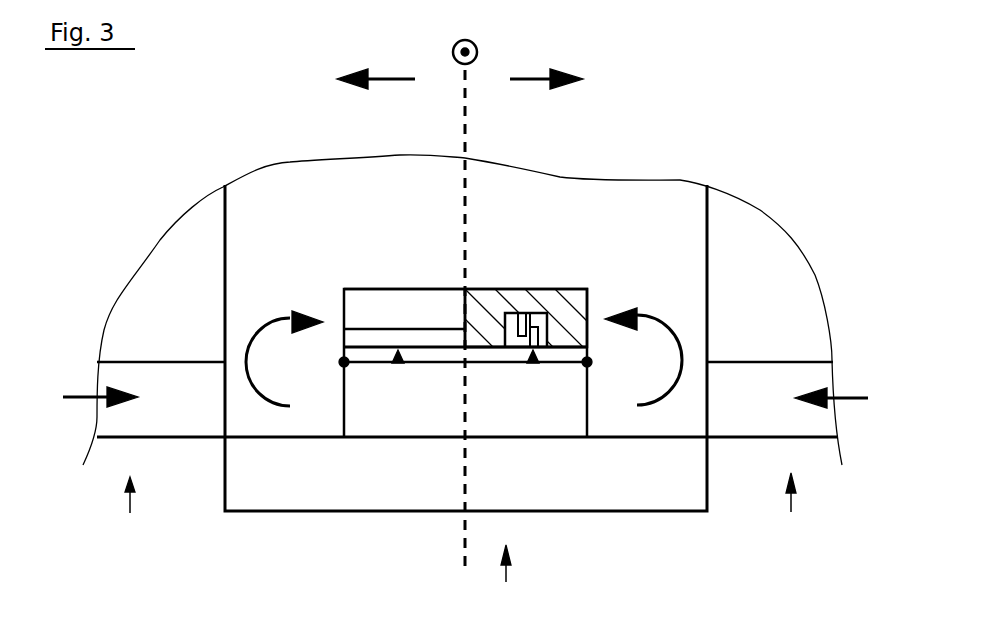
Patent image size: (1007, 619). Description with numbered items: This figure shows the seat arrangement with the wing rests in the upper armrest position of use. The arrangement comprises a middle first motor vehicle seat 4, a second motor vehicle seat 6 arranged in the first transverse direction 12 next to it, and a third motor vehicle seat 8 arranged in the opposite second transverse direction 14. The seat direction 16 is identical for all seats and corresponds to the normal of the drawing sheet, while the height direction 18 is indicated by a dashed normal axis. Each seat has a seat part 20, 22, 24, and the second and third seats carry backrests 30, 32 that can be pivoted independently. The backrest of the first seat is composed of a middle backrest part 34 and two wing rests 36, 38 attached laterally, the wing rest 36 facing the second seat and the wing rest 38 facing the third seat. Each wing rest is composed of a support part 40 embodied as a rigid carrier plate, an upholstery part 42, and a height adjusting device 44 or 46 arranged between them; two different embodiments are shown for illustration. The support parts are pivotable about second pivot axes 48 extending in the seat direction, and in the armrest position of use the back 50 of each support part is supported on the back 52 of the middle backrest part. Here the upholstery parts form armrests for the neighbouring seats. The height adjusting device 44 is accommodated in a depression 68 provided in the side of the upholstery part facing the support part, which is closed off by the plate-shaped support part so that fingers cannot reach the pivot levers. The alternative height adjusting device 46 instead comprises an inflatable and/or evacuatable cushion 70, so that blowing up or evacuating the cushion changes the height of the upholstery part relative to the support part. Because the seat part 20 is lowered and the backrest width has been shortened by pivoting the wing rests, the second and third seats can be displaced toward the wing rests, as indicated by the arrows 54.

The first motor vehicle seat 4 is at (505, 579).
The second motor vehicle seat 6 is at (790, 507).
The third motor vehicle seat 8 is at (129, 512).
The first transverse direction 12 is at (533, 75).
The second transverse direction 14 is at (388, 75).
The seat direction 16 is at (453, 50).
The height direction 18 is at (465, 540).
The seat part 20 is at (528, 487).
The seat part 22 is at (727, 413).
The seat part 24 is at (198, 413).
The backrest 30 is at (764, 259).
The backrest 32 is at (165, 257).
The middle backrest part 34 is at (475, 412).
The wing rest 36 is at (587, 276).
The wing rest 38 is at (345, 276).
The support part 40 is at (421, 356).
The upholstery part 42 is at (385, 300).
The height adjusting device 44 is at (534, 352).
The height adjusting device 46 is at (398, 352).
The second pivot axis 48 is at (344, 362).
The back 50 is at (354, 376).
The back 52 is at (345, 338).
The arrows 54 is at (85, 395).
The depression 68 is at (531, 312).
The cushion 70 is at (412, 337).